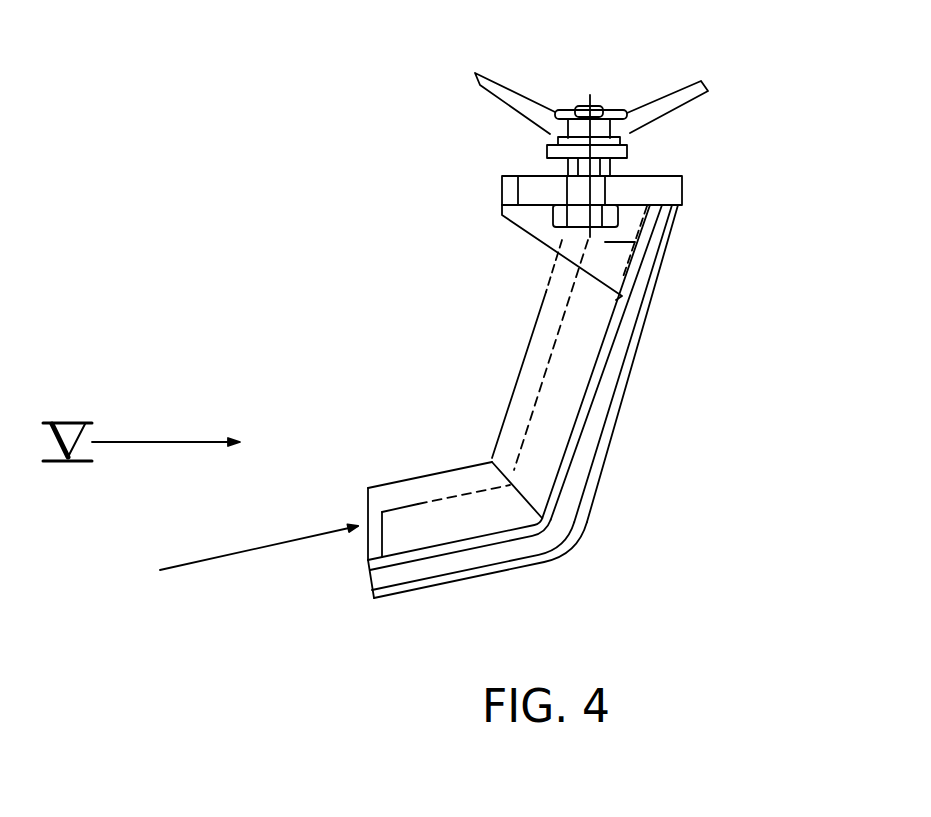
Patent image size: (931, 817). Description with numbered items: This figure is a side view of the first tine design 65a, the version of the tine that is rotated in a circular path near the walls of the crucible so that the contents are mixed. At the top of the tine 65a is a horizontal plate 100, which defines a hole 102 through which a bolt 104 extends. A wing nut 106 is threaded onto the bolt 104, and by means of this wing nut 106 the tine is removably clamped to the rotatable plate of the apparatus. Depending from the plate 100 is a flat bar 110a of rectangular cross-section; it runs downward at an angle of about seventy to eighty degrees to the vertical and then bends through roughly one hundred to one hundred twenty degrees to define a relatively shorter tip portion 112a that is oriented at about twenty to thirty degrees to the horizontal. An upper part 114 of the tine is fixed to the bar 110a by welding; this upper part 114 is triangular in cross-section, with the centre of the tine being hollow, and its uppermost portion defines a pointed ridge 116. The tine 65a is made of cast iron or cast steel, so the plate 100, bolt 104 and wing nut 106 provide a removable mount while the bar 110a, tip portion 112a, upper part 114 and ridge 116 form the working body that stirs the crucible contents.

The horizontal plate 100 is at (683, 183).
The hole 102 is at (605, 192).
The bolt 104 is at (547, 160).
The wing nut 106 is at (660, 100).
The tine 65a is at (647, 352).
The flat bar 110a is at (610, 393).
The tip portion 112a is at (508, 550).
The upper part 114 is at (435, 487).
The pointed ridge 116 is at (500, 430).